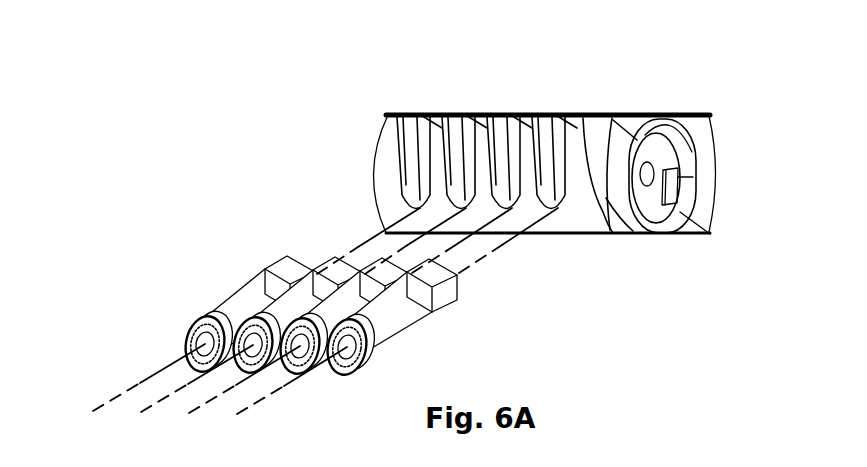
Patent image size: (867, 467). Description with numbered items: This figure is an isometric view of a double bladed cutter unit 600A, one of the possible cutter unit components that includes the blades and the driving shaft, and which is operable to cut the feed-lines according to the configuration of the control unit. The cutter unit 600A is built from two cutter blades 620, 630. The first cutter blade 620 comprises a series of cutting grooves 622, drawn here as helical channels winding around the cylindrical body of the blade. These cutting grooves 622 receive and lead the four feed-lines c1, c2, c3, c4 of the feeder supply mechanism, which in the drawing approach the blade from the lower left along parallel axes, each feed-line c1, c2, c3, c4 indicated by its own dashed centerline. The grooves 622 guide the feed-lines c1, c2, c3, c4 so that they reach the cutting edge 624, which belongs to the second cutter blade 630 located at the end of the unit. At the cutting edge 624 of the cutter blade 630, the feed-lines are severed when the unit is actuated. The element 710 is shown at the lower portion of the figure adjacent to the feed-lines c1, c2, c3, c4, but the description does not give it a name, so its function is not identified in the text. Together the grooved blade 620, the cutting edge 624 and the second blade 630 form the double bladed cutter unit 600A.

The double bladed cutter unit 600A is at (546, 50).
The cutter blade 620 is at (385, 207).
The cutting grooves 622 is at (428, 156).
The cutting edge 624 is at (684, 100).
The cutter blade 630 is at (702, 192).
The cable 710 is at (402, 318).
The feed-line c1 is at (247, 322).
The feed-line c2 is at (294, 324).
The feed-line c3 is at (338, 326).
The feed-line c4 is at (382, 327).